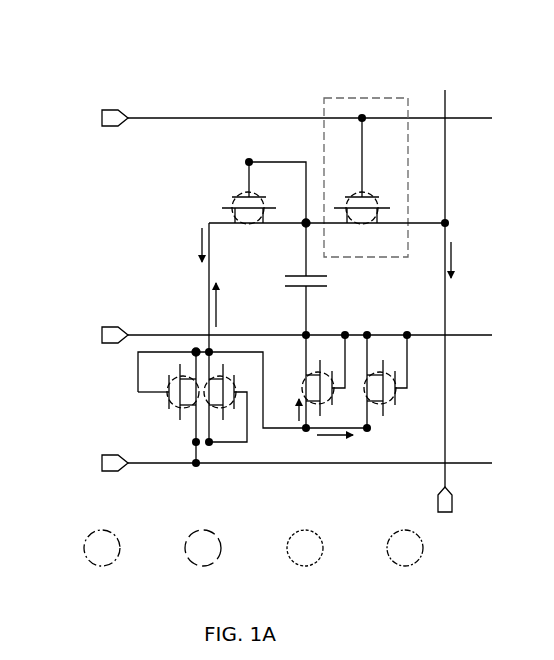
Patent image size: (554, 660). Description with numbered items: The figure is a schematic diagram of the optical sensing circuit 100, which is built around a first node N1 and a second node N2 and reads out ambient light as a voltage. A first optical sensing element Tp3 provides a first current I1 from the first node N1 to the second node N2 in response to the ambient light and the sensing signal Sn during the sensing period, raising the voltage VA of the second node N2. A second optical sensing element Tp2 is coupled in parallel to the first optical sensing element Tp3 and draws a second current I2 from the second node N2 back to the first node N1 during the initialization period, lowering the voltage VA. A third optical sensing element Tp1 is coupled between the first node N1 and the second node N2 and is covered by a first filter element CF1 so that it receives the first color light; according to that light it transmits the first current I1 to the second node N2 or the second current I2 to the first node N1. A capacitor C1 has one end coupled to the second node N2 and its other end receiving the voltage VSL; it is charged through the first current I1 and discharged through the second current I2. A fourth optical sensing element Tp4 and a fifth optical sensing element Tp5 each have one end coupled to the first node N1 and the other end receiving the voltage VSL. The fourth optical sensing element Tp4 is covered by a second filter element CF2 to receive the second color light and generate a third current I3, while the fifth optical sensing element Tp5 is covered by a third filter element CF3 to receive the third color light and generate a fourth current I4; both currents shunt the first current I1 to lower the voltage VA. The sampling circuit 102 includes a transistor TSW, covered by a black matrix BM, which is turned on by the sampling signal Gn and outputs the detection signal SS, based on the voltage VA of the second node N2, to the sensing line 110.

The optical sensing circuit 100 is at (62, 52).
The sampling circuit 102 is at (371, 97).
The sensing line 110 is at (447, 104).
The third optical sensing element Tp1 is at (249, 205).
The second optical sensing element Tp2 is at (168, 401).
The first optical sensing element Tp3 is at (225, 403).
The fourth optical sensing element Tp4 is at (308, 381).
The fifth optical sensing element Tp5 is at (396, 381).
The transistor TSW is at (362, 183).
The capacitor C1 is at (319, 279).
The first node N1 is at (194, 348).
The second node N2 is at (304, 222).
The voltage of the second node VA is at (297, 233).
The first current I1 is at (225, 305).
The second current I2 is at (191, 245).
The third current I3 is at (289, 412).
The fourth current I4 is at (335, 445).
The detection signal SS is at (462, 260).
The sampling signal Gn is at (272, 119).
The voltage VSL is at (277, 336).
The sensing signal Sn is at (273, 464).
The first filter element CF1 is at (118, 548).
The second filter element CF2 is at (219, 548).
The third filter element CF3 is at (321, 548).
The black matrix BM is at (418, 548).